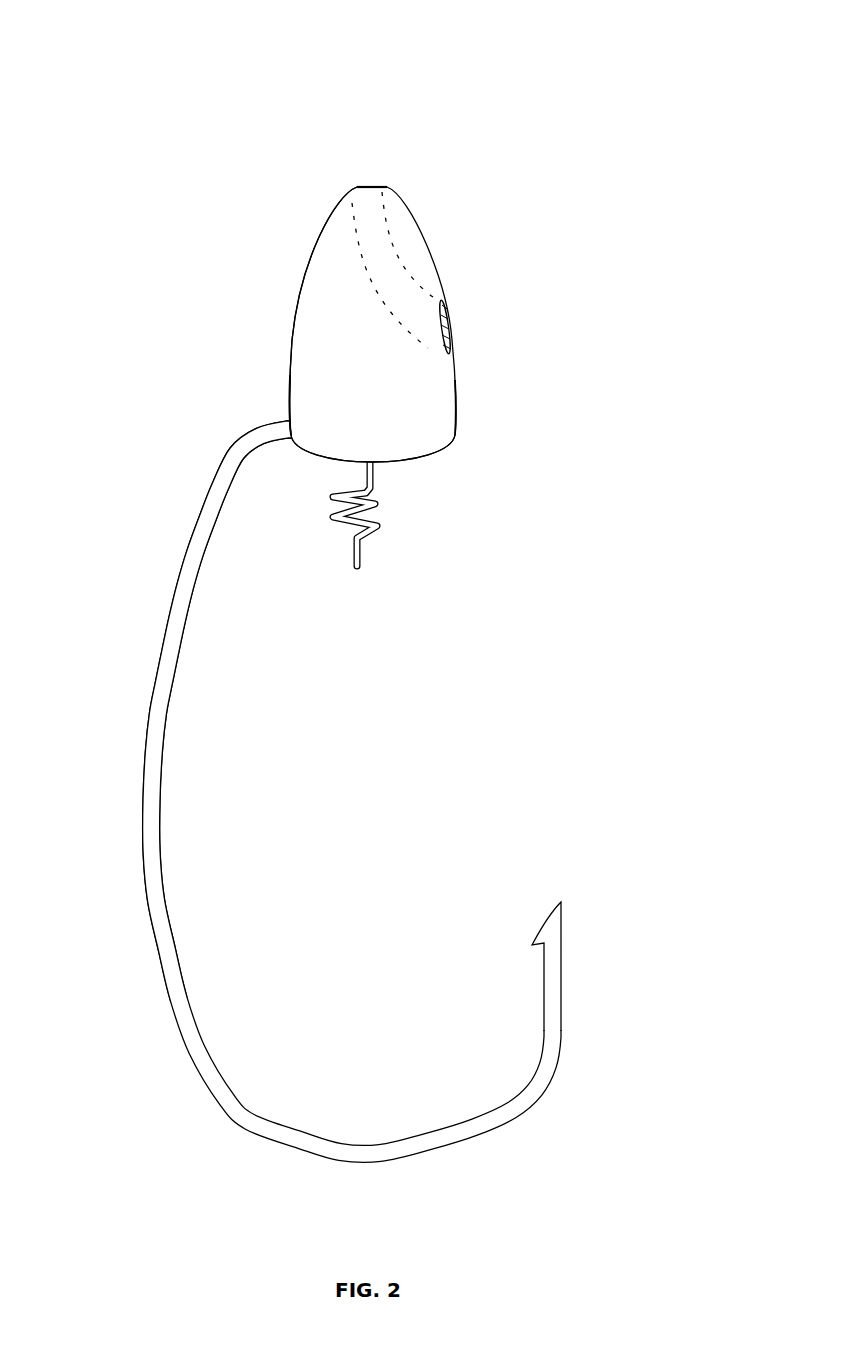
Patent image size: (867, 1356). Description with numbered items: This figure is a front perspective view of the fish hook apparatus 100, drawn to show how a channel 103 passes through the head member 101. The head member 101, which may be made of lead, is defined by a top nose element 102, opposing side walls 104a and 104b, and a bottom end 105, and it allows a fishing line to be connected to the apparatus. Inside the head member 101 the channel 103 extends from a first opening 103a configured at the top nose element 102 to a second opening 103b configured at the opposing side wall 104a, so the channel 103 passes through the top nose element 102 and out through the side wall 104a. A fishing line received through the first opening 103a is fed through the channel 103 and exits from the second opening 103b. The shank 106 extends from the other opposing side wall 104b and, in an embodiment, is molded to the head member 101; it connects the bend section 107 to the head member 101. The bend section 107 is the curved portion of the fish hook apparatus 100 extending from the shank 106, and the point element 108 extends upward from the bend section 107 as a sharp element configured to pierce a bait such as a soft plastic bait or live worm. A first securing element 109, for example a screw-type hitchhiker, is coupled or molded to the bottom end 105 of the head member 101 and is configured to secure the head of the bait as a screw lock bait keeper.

The fish hook apparatus 100 is at (470, 58).
The head member 101 is at (446, 248).
The top nose element 102 is at (335, 205).
The channel 103 is at (387, 260).
The first opening 103a is at (367, 185).
The second opening 103b is at (447, 323).
The opposing side wall 104a is at (454, 405).
The opposing side wall 104b is at (289, 375).
The bottom end 105 is at (425, 455).
The shank 106 is at (143, 832).
The bend section 107 is at (233, 1115).
The point element 108 is at (561, 933).
The first securing element 109 is at (360, 548).